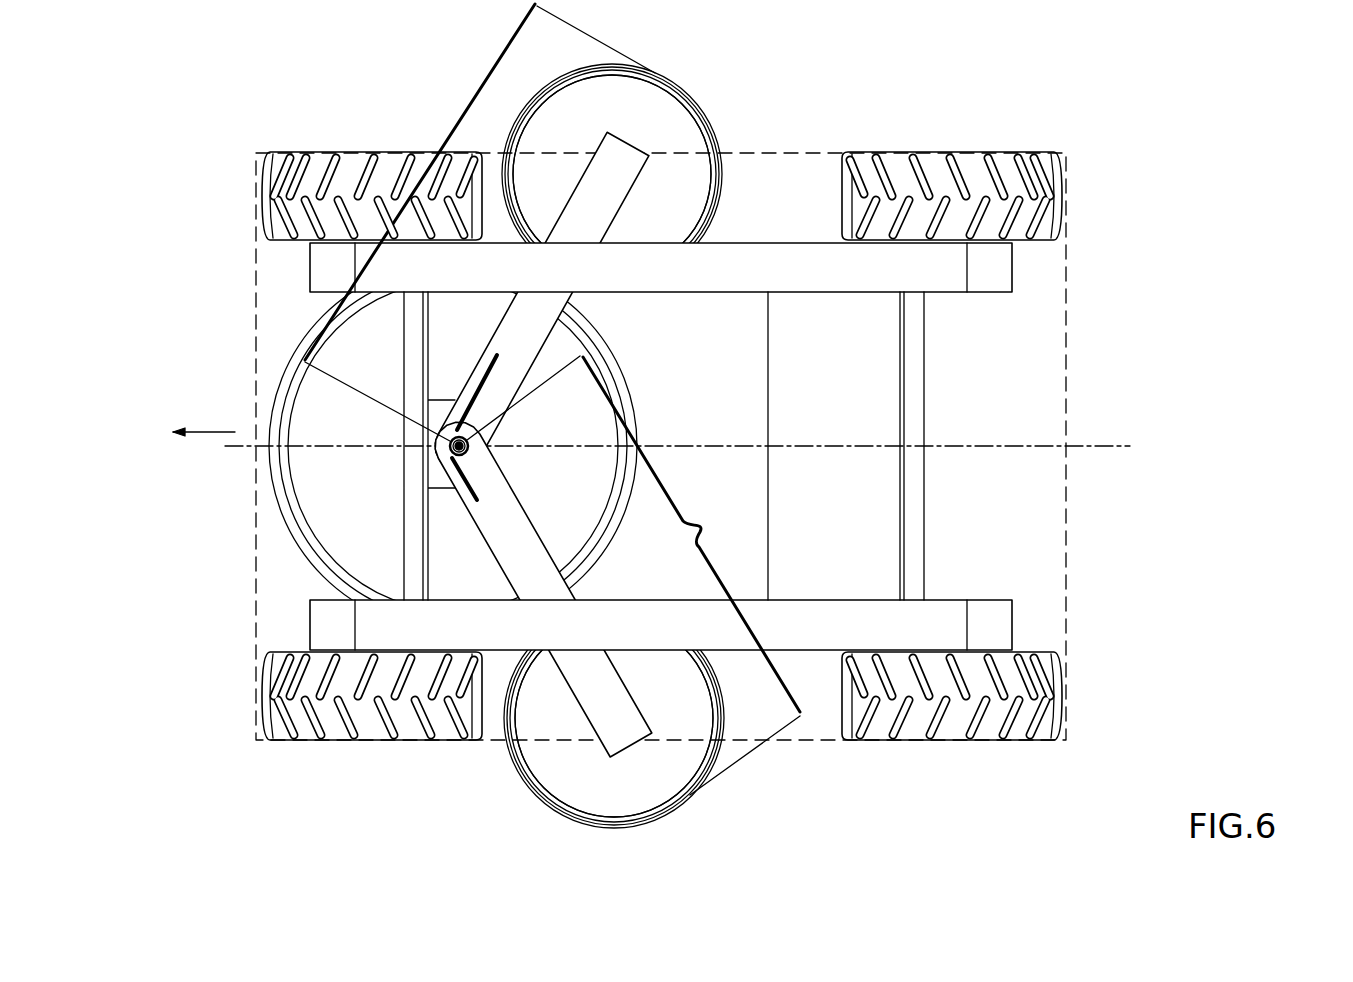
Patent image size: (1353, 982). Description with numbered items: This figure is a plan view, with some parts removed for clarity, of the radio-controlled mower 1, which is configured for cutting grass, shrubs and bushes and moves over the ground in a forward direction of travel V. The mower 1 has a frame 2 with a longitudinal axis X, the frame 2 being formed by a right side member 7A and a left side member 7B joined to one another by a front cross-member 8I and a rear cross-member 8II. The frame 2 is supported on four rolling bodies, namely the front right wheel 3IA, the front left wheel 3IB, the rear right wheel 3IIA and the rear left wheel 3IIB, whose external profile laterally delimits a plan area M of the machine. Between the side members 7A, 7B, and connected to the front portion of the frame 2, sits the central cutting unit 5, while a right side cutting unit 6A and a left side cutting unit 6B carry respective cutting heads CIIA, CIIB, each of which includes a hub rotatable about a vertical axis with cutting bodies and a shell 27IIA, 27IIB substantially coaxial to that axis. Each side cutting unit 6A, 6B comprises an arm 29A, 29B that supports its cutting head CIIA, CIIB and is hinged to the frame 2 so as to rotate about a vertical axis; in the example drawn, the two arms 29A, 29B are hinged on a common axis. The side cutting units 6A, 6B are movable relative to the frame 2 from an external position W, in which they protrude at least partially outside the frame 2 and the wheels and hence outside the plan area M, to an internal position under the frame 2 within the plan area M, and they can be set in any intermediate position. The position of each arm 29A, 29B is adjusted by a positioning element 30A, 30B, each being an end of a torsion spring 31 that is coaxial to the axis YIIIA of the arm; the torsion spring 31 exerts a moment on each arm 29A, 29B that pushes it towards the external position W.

The radio-controlled mower 1 is at (670, 435).
The frame 2 is at (782, 218).
The front right wheel 3IA is at (262, 178).
The front left wheel 3IB is at (262, 715).
The rear right wheel 3IIA is at (966, 160).
The rear left wheel 3IIB is at (965, 730).
The central cutting unit 5 is at (275, 497).
The right side cutting unit 6A is at (393, 186).
The left side cutting unit 6B is at (629, 575).
The right side member 7A is at (943, 262).
The left side member 7B is at (945, 628).
The front cross-member 8I is at (410, 514).
The rear cross-member 8II is at (915, 378).
The shell 27IIA is at (697, 143).
The shell 27IIB is at (568, 778).
The arm 29A is at (585, 197).
The arm 29B is at (530, 547).
The positioning element 30A is at (465, 393).
The positioning element 30B is at (462, 493).
The torsion spring 31 is at (480, 428).
The cutting head CIIA is at (630, 100).
The cutting head CIIB is at (648, 782).
The external position W is at (688, 88).
The plan area M is at (1068, 323).
The longitudinal axis X is at (1085, 447).
The forward direction of travel V is at (204, 421).
The vertical axis YIIIA is at (483, 460).